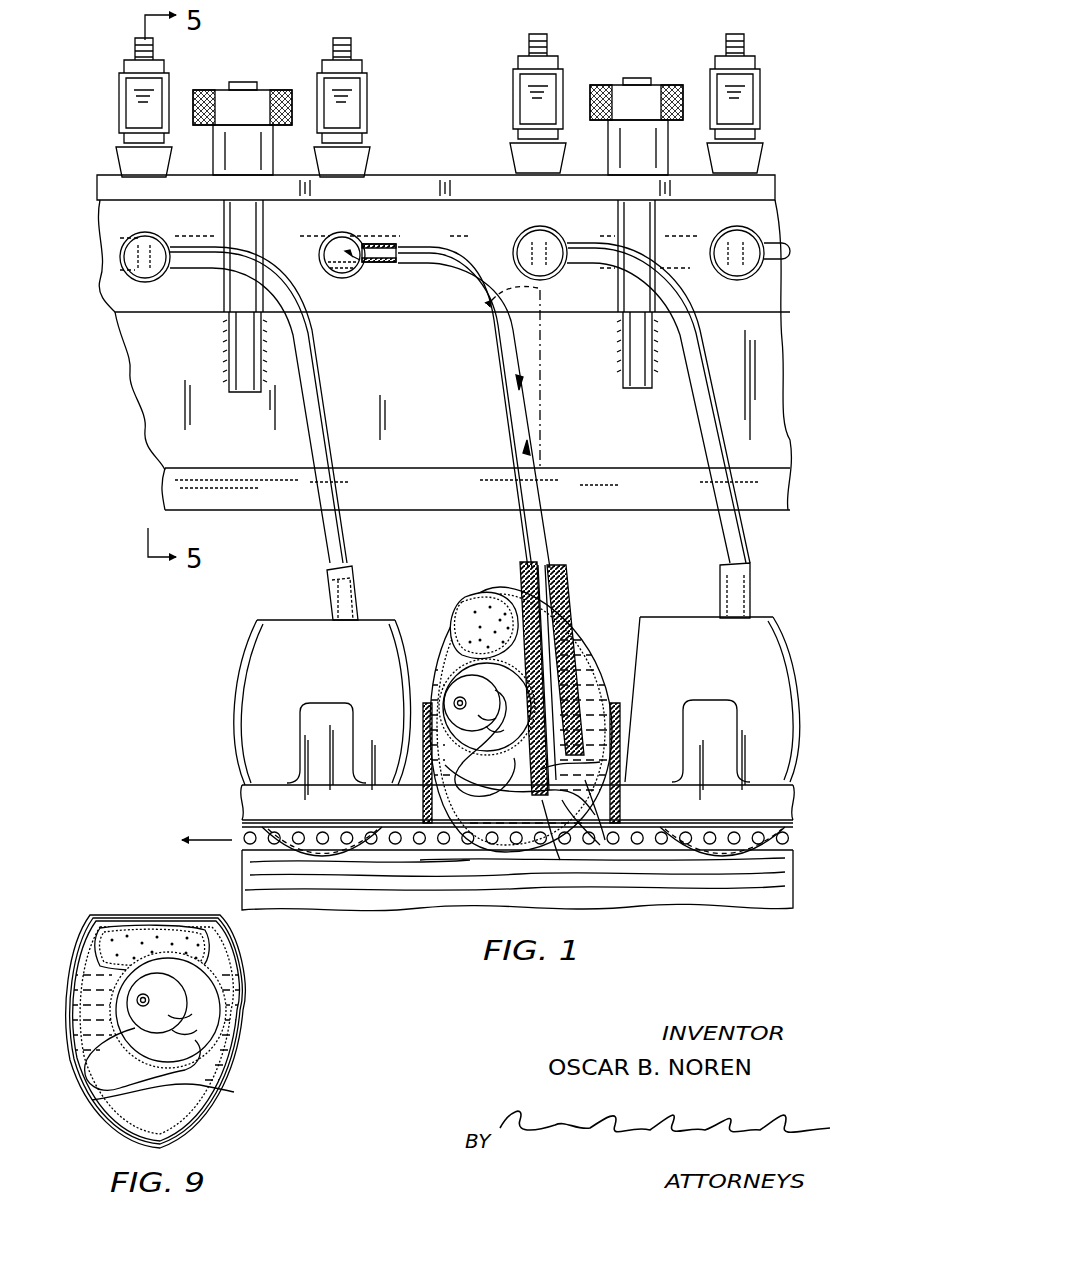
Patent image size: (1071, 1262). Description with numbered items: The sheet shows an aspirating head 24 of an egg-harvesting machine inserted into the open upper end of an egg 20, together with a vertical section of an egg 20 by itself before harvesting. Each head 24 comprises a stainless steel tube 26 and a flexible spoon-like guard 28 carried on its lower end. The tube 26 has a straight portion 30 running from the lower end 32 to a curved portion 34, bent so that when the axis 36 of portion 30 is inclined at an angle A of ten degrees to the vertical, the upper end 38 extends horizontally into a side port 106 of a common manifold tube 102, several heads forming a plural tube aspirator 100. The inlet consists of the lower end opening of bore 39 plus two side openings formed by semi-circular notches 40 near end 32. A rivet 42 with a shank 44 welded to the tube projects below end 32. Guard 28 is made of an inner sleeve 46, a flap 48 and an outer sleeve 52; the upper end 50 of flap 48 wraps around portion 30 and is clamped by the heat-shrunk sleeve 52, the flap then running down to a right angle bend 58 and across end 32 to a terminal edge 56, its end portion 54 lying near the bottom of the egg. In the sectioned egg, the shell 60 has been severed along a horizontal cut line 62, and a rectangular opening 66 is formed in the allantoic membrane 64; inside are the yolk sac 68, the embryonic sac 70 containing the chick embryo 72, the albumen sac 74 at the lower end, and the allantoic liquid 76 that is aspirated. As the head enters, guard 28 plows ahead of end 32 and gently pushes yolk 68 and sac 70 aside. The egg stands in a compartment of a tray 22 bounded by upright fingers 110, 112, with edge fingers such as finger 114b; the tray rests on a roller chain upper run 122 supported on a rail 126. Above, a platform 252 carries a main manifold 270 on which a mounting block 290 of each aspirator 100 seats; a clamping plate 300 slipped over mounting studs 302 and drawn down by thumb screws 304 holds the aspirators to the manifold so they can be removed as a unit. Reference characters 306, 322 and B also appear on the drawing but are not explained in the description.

In FIG. 1, the egg 20 is at (260, 652).
In FIG. 9, the egg 20 is at (222, 1090).
In FIG. 1, the tray 22 is at (238, 784).
In FIG. 1, the aspirating head 24 is at (482, 426).
In FIG. 1, the stainless steel tube 26 is at (323, 536).
In FIG. 1, the guard 28 is at (324, 577).
In FIG. 1, the straight portion 30 is at (547, 528).
In FIG. 1, the lower end 32 is at (614, 742).
In FIG. 1, the curved portion 34 is at (440, 296).
In FIG. 1, the axis 36 is at (497, 352).
In FIG. 1, the upper end 38 is at (362, 264).
In FIG. 1, the bore 39 is at (532, 552).
In FIG. 1, the semi-circular notches 40 is at (587, 782).
In FIG. 1, the flap fastener 42 is at (542, 806).
In FIG. 1, the shank 44 is at (562, 806).
In FIG. 1, the inner sleeve 46 is at (588, 665).
In FIG. 1, the flap 48 is at (590, 719).
In FIG. 1, the upper end of flap 50 is at (362, 588).
In FIG. 1, the outer sleeve 52 is at (358, 585).
In FIG. 1, the end portion 54 is at (600, 762).
In FIG. 1, the terminal edge 56 is at (606, 718).
In FIG. 1, the right angle bend 58 is at (540, 797).
In FIG. 1, the shell 60 is at (600, 662).
In FIG. 9, the shell 60 is at (245, 1042).
In FIG. 1, the cut line 62 is at (478, 592).
In FIG. 9, the cut line 62 is at (112, 872).
In FIG. 9, the allantoic membrane 64 is at (141, 918).
In FIG. 9, the opening 66 is at (186, 918).
In FIG. 1, the yolk sac 68 is at (468, 608).
In FIG. 9, the yolk sac 68 is at (96, 940).
In FIG. 1, the embryonic sac 70 is at (441, 662).
In FIG. 9, the embryonic sac 70 is at (80, 1048).
In FIG. 1, the chick embryo 72 is at (440, 731).
In FIG. 9, the chick embryo 72 is at (125, 990).
In FIG. 1, the albumen sac 74 is at (490, 815).
In FIG. 9, the albumen sac 74 is at (128, 1123).
In FIG. 1, the allantoic liquid 76 is at (580, 682).
In FIG. 9, the allantoic liquid 76 is at (228, 988).
In FIG. 1, the plural tube aspirator 100 is at (155, 236).
In FIG. 1, the manifold tube 102 is at (338, 246).
In FIG. 1, the side port 106 is at (372, 245).
In FIG. 1, the finger 110 is at (423, 704).
In FIG. 1, the finger 112 is at (660, 700).
In FIG. 1, the side edge finger 114b is at (333, 706).
In FIG. 1, the upper chain run 122 is at (652, 842).
In FIG. 1, the rail 126 is at (356, 900).
In FIG. 1, the platform 252 is at (162, 485).
In FIG. 1, the main manifold 270 is at (148, 392).
In FIG. 1, the mounting block 290 is at (404, 228).
In FIG. 1, the clamping plate 300 is at (400, 185).
In FIG. 1, the mounting stud 302 is at (262, 60).
In FIG. 1, the thumb screw 304 is at (282, 88).
In FIG. 1, the fitting 306 is at (370, 62).
In FIG. 1, the plug 322 is at (120, 160).
In FIG. 1, the angle A is at (515, 316).
In FIG. 1, the axis B is at (530, 405).